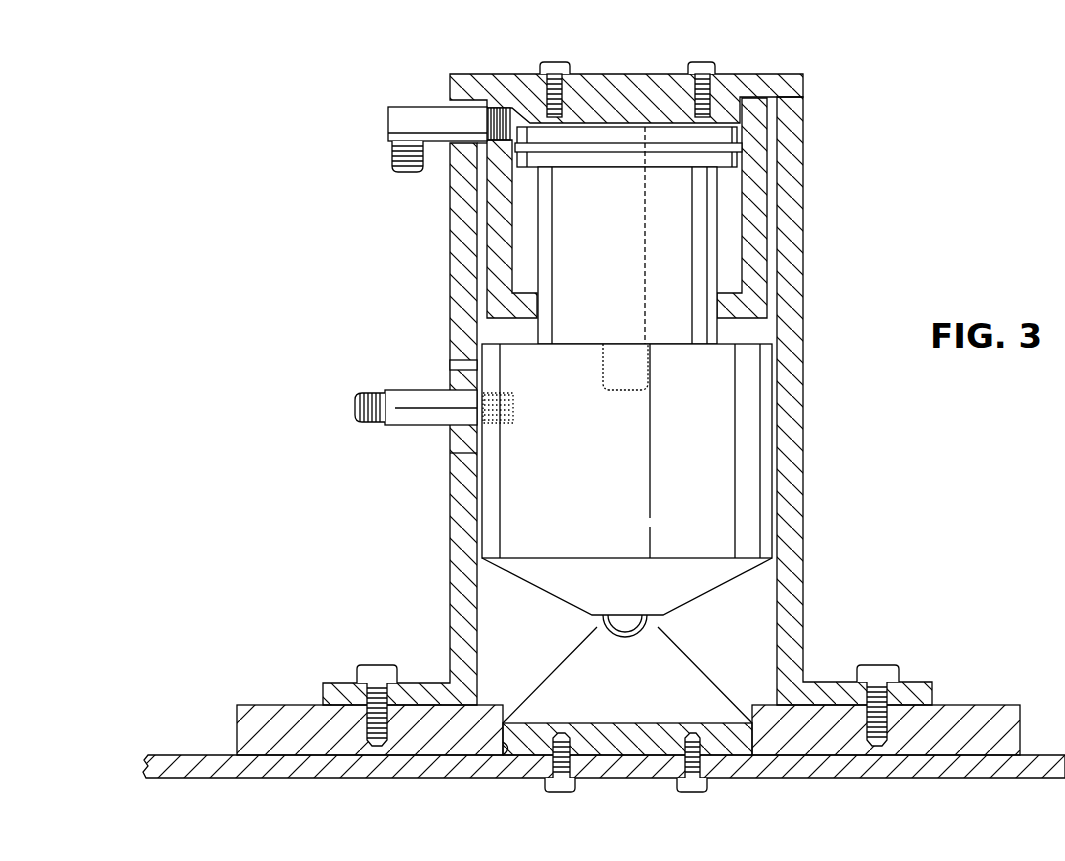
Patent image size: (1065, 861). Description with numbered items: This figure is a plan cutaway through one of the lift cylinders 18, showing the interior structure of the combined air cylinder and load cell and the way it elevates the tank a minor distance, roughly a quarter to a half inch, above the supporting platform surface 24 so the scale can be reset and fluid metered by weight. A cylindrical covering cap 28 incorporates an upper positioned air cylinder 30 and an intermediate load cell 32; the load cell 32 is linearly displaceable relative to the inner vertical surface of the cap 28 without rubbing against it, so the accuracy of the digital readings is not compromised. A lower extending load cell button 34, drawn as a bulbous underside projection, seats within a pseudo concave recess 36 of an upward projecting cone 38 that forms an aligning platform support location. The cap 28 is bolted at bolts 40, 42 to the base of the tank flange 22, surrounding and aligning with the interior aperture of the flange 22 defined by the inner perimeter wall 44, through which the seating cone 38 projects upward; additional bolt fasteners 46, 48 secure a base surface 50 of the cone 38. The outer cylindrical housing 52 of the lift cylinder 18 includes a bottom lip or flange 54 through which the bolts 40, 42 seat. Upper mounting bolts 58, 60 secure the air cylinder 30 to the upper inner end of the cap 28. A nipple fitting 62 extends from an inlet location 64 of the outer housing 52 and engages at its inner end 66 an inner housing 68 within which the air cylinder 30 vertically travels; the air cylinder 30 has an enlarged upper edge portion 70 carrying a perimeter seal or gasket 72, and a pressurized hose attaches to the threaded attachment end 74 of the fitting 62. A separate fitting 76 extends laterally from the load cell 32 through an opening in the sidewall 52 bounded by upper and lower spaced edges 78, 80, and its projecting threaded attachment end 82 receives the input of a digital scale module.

The lift cylinder 18 is at (378, 282).
The tank flange 22 is at (270, 705).
The supporting platform surface 24 is at (178, 755).
The covering cap 28 is at (500, 82).
The air cylinder 30 is at (583, 270).
The load cell 32 is at (564, 484).
The load cell button 34 is at (645, 620).
The concave recess 36 is at (598, 620).
The cone 38 is at (683, 685).
The bolt 40 is at (378, 672).
The bolt 42 is at (875, 672).
The inner perimeter wall 44 is at (507, 752).
The bolt fastener 46 is at (562, 794).
The bolt fastener 48 is at (693, 794).
The base surface 50 is at (620, 740).
The outer cylindrical housing 52 is at (792, 432).
The bottom flange 54 is at (420, 690).
The mounting bolt 58 is at (553, 68).
The mounting bolt 60 is at (700, 68).
The nipple fitting 62 is at (425, 110).
The inlet location 64 is at (455, 148).
The inner end 66 is at (500, 118).
The inner housing 68 is at (765, 232).
The upper edge portion 70 is at (718, 130).
The perimeter seal 72 is at (742, 148).
The threaded attachment end 74 is at (405, 158).
The fitting 76 is at (416, 400).
The upper edge 78 is at (455, 368).
The lower edge 80 is at (455, 452).
The threaded attachment end 82 is at (355, 412).